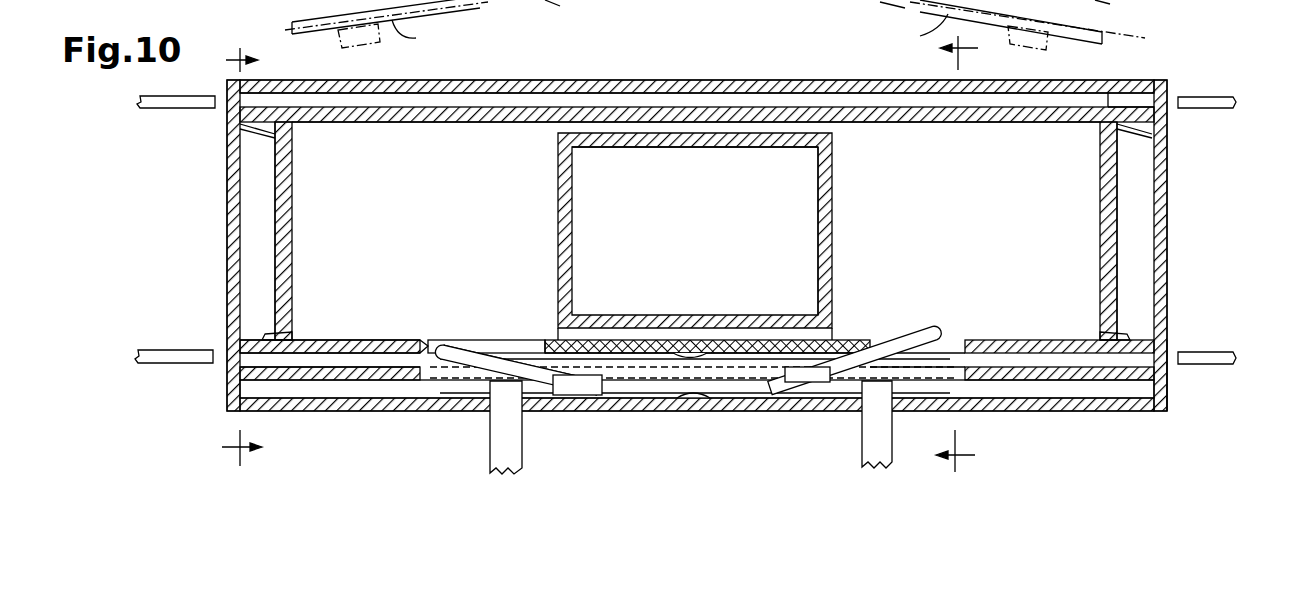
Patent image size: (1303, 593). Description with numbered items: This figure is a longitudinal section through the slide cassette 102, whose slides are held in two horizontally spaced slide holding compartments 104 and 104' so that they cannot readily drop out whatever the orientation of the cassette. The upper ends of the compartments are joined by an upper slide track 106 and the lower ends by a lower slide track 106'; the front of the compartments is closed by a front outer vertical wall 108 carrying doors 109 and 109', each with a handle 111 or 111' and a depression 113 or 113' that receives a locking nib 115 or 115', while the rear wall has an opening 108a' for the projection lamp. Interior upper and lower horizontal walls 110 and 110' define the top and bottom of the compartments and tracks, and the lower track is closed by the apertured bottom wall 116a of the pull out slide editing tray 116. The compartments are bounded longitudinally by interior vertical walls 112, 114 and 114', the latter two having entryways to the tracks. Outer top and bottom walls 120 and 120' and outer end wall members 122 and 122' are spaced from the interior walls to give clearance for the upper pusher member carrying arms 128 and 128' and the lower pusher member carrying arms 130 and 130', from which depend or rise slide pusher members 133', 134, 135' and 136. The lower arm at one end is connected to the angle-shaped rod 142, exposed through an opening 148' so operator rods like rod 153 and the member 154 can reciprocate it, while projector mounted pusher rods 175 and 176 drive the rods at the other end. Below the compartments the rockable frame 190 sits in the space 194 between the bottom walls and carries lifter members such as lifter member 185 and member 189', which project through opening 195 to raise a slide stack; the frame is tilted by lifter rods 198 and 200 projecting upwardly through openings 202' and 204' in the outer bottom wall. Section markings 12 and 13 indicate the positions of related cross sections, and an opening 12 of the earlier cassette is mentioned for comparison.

The cassette 102 is at (565, 76).
The slide holding compartment 104 is at (234, 231).
The slide holding compartment 104' is at (1165, 231).
The upper slide track 106 is at (696, 87).
The lower slide track 106' is at (707, 318).
The front outer vertical wall 108 is at (562, 4).
The opening 108a' is at (695, 104).
The door 109 is at (424, 41).
The door 109' is at (910, 34).
The interior upper horizontal wall 110 is at (697, 139).
The interior lower horizontal wall 110' is at (330, 311).
The handle 111 is at (335, 48).
The handle 111' is at (1065, 36).
The interior vertical wall 112 is at (280, 258).
The depression 113 is at (361, 19).
The depression 113' is at (1049, 27).
The interior vertical wall 114 is at (695, 236).
The interior vertical wall 114' is at (783, 231).
The locking nib 115 is at (251, 4).
The locking nib 115' is at (1130, 15).
The pull out slide editing tray 116 is at (659, 346).
The apertured bottom wall 116a is at (720, 346).
The outer top wall 120 is at (697, 69).
The outer bottom wall 120' is at (697, 438).
The outer vertical end wall member 122 is at (200, 245).
The outer vertical end wall member 122' is at (1196, 245).
The upper pusher member carrying arm 128 is at (653, 79).
The upper pusher member carrying arm 128' is at (1168, 79).
The lower pusher member carrying arm 130 is at (284, 371).
The lower pusher member carrying arm 130' is at (1108, 345).
The slide pusher member 133' is at (1092, 139).
The slide pusher member 134 is at (272, 131).
The slide pusher member 135' is at (1166, 310).
The slide pusher member 136 is at (268, 336).
The angle-shaped rod 142 is at (300, 380).
The opening 148' is at (1196, 382).
The operator rod 153 is at (150, 102).
The right guide rail 154 is at (1212, 108).
The projector mounted pusher rod 175 is at (150, 352).
The projector mounted pusher rod 176 is at (1218, 365).
The lifter member 185 is at (452, 354).
The hinge 189' is at (872, 12).
The rockable frame 190 is at (652, 402).
The space 194 is at (1018, 386).
The opening 195 is at (432, 340).
The lifter rod 198 is at (512, 453).
The lifter rod 200 is at (866, 450).
The opening 202' is at (511, 416).
The opening 204' is at (818, 408).
The opening 12 is at (231, 256).
The section line 13- 13 is at (968, 254).